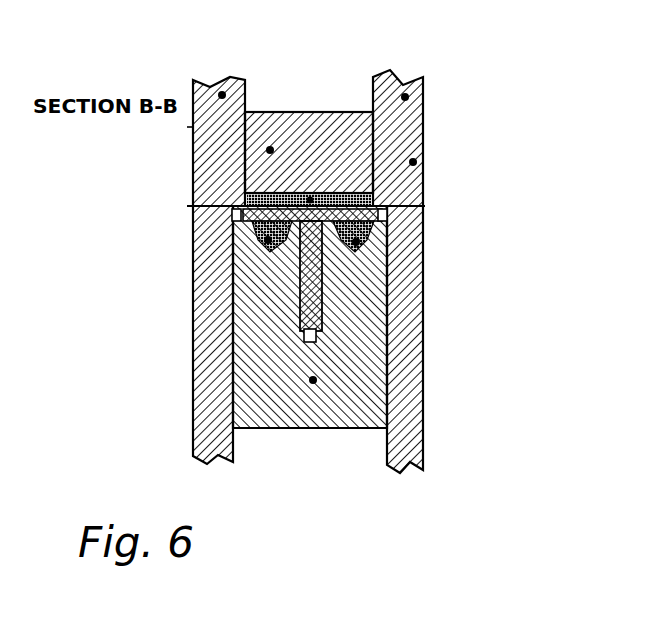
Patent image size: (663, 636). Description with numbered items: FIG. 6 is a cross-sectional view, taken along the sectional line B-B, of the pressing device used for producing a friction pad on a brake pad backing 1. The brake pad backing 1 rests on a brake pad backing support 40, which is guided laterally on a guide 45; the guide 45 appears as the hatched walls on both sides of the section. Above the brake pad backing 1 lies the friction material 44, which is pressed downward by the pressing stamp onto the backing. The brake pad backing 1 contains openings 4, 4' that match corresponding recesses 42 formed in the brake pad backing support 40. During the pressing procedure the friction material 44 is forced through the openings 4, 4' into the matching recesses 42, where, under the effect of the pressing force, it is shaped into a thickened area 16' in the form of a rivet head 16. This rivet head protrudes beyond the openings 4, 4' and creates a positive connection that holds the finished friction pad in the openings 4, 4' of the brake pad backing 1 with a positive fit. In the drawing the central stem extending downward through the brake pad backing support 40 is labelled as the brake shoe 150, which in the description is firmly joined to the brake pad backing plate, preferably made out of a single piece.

The brake pad backing 1 is at (413, 160).
The opening 4 is at (290, 173).
The opening 4' is at (488, 204).
The rivet head 16 is at (297, 299).
The thickened area in the form of a rivet head 16' is at (217, 186).
The brake pad backing support 40 is at (313, 380).
The recess 42 is at (262, 240).
The friction material 44 is at (270, 150).
The guide 45 is at (223, 93).
The brake shoe 150 is at (310, 342).